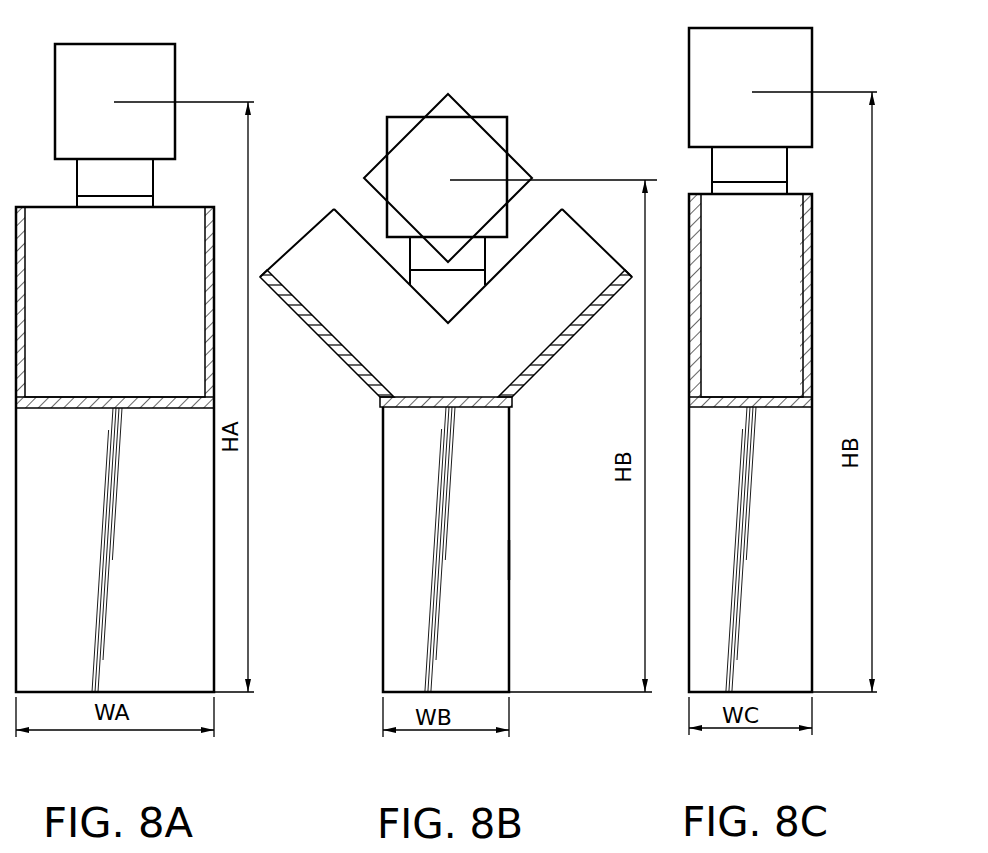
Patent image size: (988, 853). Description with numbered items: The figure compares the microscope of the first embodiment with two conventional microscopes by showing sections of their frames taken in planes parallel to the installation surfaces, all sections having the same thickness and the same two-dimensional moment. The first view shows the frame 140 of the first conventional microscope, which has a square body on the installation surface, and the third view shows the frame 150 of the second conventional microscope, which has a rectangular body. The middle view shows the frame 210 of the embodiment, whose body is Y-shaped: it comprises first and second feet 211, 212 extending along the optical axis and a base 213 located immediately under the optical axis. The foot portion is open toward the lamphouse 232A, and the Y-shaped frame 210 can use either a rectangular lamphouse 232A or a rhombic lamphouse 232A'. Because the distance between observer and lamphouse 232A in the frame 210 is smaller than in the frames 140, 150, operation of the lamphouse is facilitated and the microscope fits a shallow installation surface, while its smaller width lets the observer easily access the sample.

In FIG. 8A, the frame 140 is at (214, 587).
In FIG. 8C, the frame 150 is at (812, 600).
In FIG. 8B, the frame 210 is at (509, 500).
In FIG. 8B, the first foot 211 is at (337, 362).
In FIG. 8B, the second foot 212 is at (563, 350).
In FIG. 8B, the base 213 is at (509, 555).
In FIG. 8B, the lamphouse 232A is at (496, 176).
In FIG. 8B, the rhombic lamphouse 232A' is at (463, 152).